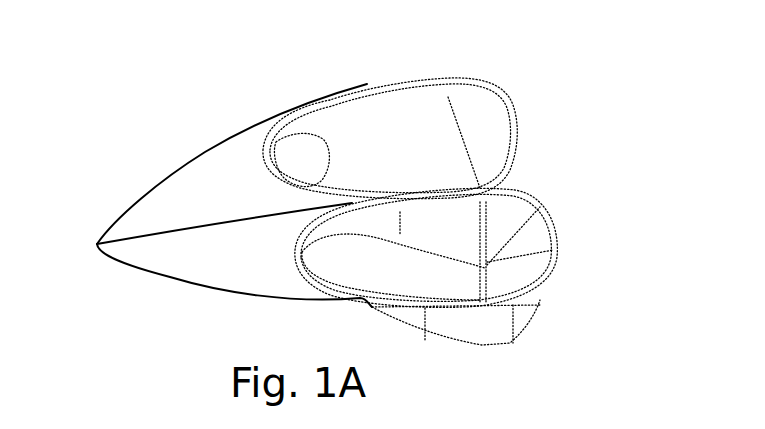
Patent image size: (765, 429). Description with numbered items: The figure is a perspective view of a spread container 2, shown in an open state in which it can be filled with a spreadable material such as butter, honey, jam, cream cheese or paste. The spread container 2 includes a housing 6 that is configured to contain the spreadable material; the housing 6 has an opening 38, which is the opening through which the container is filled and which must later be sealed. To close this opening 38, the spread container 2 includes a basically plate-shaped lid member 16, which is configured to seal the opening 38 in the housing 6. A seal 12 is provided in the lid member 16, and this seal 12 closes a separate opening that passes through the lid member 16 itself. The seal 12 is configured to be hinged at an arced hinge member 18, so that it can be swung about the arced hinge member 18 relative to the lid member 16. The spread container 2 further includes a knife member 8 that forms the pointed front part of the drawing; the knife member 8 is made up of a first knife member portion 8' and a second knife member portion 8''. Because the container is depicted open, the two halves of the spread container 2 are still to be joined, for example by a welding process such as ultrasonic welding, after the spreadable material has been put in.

The spread container 2 is at (193, 94).
The housing 6 is at (533, 228).
The knife member 8 is at (234, 222).
The first knife member portion 8' is at (234, 297).
The second knife member portion 8'' is at (222, 210).
The seal 12 is at (319, 156).
The lid member 16 is at (438, 110).
The arced hinge member 18 is at (327, 154).
The opening 38 is at (487, 269).